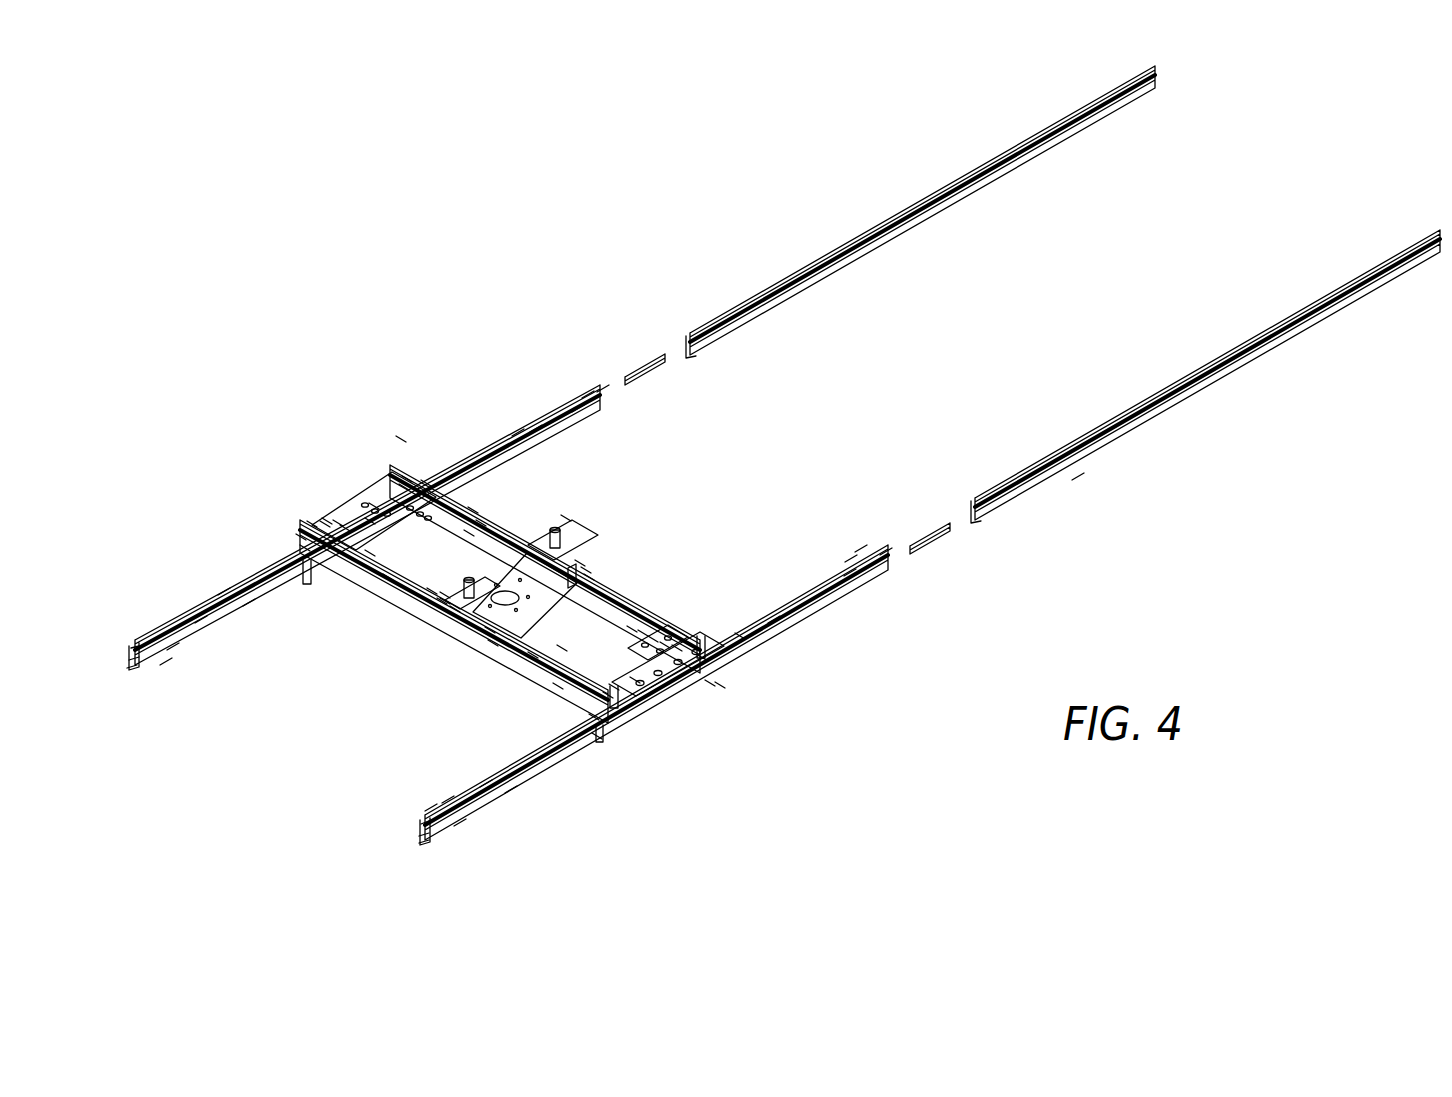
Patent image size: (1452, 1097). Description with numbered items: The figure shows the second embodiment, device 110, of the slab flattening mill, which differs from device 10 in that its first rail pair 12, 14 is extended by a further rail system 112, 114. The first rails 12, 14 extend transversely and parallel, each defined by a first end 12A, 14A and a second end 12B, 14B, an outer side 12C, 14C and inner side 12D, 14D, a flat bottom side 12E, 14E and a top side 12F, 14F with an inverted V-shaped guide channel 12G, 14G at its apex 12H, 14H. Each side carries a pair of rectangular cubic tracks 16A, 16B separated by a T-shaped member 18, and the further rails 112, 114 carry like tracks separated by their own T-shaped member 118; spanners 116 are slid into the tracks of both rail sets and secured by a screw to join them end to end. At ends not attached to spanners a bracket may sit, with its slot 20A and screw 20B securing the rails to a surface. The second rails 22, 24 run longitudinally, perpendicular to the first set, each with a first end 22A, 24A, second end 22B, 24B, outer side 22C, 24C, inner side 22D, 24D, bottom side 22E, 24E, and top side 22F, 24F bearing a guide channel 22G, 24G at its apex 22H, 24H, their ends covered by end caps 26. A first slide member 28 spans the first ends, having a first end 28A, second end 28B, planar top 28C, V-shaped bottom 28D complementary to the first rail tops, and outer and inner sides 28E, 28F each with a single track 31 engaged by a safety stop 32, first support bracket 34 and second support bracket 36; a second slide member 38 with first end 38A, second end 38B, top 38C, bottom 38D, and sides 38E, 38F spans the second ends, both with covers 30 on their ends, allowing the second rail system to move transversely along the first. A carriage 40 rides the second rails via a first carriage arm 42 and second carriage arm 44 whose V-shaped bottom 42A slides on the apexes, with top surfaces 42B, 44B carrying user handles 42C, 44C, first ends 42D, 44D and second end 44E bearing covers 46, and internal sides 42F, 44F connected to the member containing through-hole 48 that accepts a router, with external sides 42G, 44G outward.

The slab flattening mill device 10 is at (405, 500).
The first rail 12 is at (500, 800).
The first end of rail 12A is at (420, 822).
The second end of rail 12B is at (885, 552).
The outer side of rail 12C is at (510, 790).
The inner side of rail 12D is at (485, 783).
The bottom side of rail 12E is at (459, 823).
The top side of rail 12F is at (860, 550).
The inverted V-shaped guide channel 12G is at (447, 800).
The apex 12H is at (430, 808).
The first rail 14 is at (167, 640).
The first end of rail 14A is at (135, 648).
The second end of rail 14B is at (603, 390).
The outer side of rail 14C is at (223, 592).
The inner side of rail 14D is at (248, 603).
The bottom side of rail 14E is at (165, 662).
The top side of rail 14F is at (517, 440).
The inverted V-shaped guide channel 14G is at (200, 620).
The apex 14H is at (172, 647).
The rectangular cubic shaped track 16A is at (577, 417).
The rectangular cubic shaped track 16B is at (587, 402).
The T-shaped member 18 is at (535, 445).
The slot or aperture 20A is at (130, 664).
The screw 20B is at (128, 663).
The second rail 22 is at (570, 672).
The first end of rail 22A is at (613, 687).
The second end of rail 22B is at (315, 528).
The outer side of rail 22C is at (532, 655).
The inner side of rail 22D is at (562, 648).
The bottom side of rail 22E is at (557, 685).
The top side of rail 22F is at (440, 600).
The inverted V-shaped guide channel 22G is at (432, 590).
The apex 22H is at (338, 527).
The second rail 24 is at (672, 642).
The first end of rail 24A is at (703, 655).
The second end of rail 24B is at (403, 482).
The outer side of rail 24C is at (665, 643).
The inner side of rail 24D is at (643, 633).
The bottom side of rail 24E is at (468, 530).
The top side of rail 24F is at (480, 520).
The inverted V-shaped guide channel 24G is at (425, 478).
The apex 24H is at (472, 508).
The end cap 26 is at (708, 678).
The first slide member 28 is at (703, 660).
The first end of slide member 28A is at (594, 712).
The second end of slide member 28B is at (740, 630).
The top of slide member 28C is at (677, 647).
The bottom of slide member 28D is at (597, 735).
The outer side of slide member 28E is at (632, 628).
The inner side of slide member 28F is at (720, 680).
The cover 30 is at (307, 583).
The rectangular cubic shaped track 31 is at (370, 520).
The safety stop 32 is at (635, 675).
The first support bracket 34 is at (400, 438).
The second support bracket 36 is at (350, 528).
The second slide member 38 is at (291, 455).
The first end of second slide member 38A is at (300, 536).
The second end of second slide member 38B is at (410, 478).
The top of second slide member 38C is at (338, 522).
The bottom of second slide member 38D is at (303, 545).
The outer side of second slide member 38E is at (374, 505).
The inner side of second slide member 38F is at (325, 525).
The carriage 40 is at (554, 582).
The first carriage arm 42 is at (390, 647).
The bottom of first carriage arm 42A is at (493, 640).
The top surface of first carriage arm 42B is at (472, 590).
The user handle 42C is at (453, 603).
The first end of first carriage arm 42D is at (445, 589).
The internal side of first carriage arm 42F is at (490, 627).
The external side of first carriage arm 42G is at (444, 595).
The second carriage arm 44 is at (678, 516).
The top surface of second carriage arm 44B is at (589, 574).
The user handle 44C is at (580, 560).
The first end of second carriage arm 44D is at (566, 515).
The second end of second carriage arm 44E is at (593, 586).
The internal side of second carriage arm 44F is at (575, 588).
The external side of second carriage arm 44G is at (586, 567).
The cover 46 is at (596, 575).
The through-hole 48 is at (510, 605).
The device 110 is at (385, 215).
The further rail 112 is at (1078, 478).
The further rail 114 is at (900, 243).
The spanner 116 is at (646, 357).
The T-shaped member 118 is at (1212, 388).